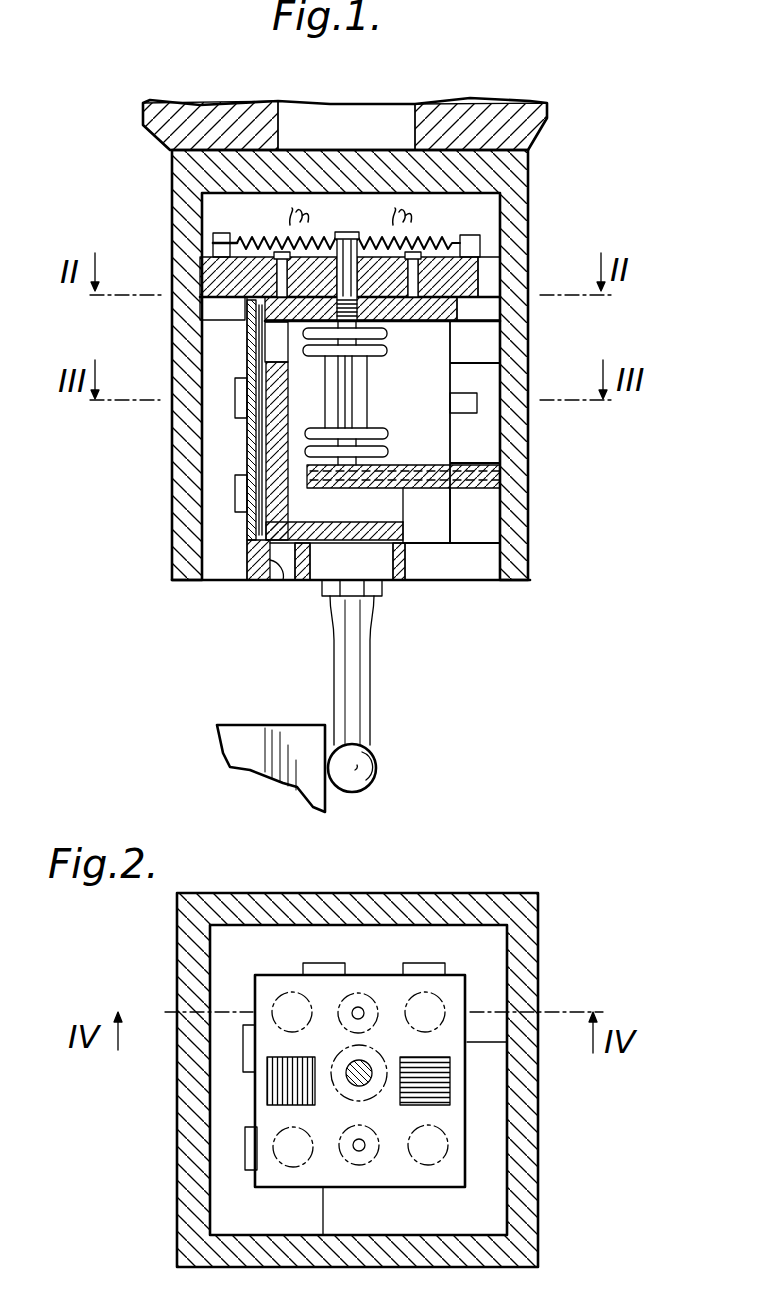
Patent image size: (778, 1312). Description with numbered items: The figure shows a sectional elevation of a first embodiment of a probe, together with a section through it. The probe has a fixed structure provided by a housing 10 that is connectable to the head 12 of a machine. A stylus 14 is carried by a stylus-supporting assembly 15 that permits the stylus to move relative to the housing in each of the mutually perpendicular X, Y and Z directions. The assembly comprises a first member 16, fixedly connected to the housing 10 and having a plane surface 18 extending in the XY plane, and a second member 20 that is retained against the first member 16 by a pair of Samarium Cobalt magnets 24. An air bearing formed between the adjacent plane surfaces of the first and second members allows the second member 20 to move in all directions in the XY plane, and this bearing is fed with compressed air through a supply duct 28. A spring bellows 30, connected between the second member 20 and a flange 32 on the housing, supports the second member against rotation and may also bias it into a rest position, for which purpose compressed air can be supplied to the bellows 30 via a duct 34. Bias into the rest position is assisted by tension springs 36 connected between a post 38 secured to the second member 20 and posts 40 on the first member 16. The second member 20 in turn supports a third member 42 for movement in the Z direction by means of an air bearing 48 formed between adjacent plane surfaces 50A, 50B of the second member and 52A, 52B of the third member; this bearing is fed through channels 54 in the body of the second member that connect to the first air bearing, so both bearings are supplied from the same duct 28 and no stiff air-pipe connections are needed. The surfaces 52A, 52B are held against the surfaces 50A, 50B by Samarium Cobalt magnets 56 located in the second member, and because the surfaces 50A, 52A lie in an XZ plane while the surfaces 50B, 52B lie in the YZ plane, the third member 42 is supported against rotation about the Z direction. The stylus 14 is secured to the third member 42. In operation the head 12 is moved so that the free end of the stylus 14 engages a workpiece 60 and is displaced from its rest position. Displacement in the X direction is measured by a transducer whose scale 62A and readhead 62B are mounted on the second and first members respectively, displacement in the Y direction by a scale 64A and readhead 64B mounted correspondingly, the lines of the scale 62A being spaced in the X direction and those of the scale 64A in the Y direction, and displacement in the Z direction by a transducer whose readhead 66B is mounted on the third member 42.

In FIG. 1, the housing 10 is at (185, 360).
In FIG. 1, the head of a machine 12 is at (547, 116).
In FIG. 1, the stylus 14 is at (367, 702).
In FIG. 1, the stylus-supporting assembly 15 is at (240, 525).
In FIG. 1, the first member 16 is at (230, 277).
In FIG. 1, the plane surface 18 is at (238, 302).
In FIG. 1, the second member 20 is at (258, 582).
In FIG. 2, the Samarium Cobalt magnets 24 is at (445, 1008).
In FIG. 2, the supply duct 28 is at (359, 1152).
In FIG. 1, the spring bellows 30 is at (368, 395).
In FIG. 1, the flange 32 is at (420, 492).
In FIG. 1, the duct 34 is at (505, 482).
In FIG. 1, the tension springs 36 is at (423, 243).
In FIG. 1, the post 38 is at (348, 246).
In FIG. 2, the post 38 is at (370, 1085).
In FIG. 1, the posts 40 is at (468, 230).
In FIG. 1, the third member 42 is at (440, 518).
In FIG. 1, the air bearing 48 is at (300, 560).
In FIG. 1, the plane surface 50A is at (208, 500).
In FIG. 1, the plane surface 50B is at (260, 420).
In FIG. 1, the plane surface 52A is at (148, 461).
In FIG. 1, the plane surface 52B is at (251, 420).
In FIG. 1, the channels 54 is at (235, 410).
In FIG. 1, the Samarium Cobalt magnets 56 is at (235, 488).
In FIG. 2, the Samarium Cobalt magnets 56 is at (425, 963).
In FIG. 1, the workpiece 60 is at (240, 742).
In FIG. 1, the scale 62A is at (255, 312).
In FIG. 2, the scale 62A is at (267, 1090).
In FIG. 1, the readhead 62B is at (275, 262).
In FIG. 1, the scale 64A is at (440, 315).
In FIG. 2, the scale 64A is at (452, 1075).
In FIG. 1, the readhead 64B is at (415, 277).
In FIG. 1, the readhead 66B is at (462, 413).